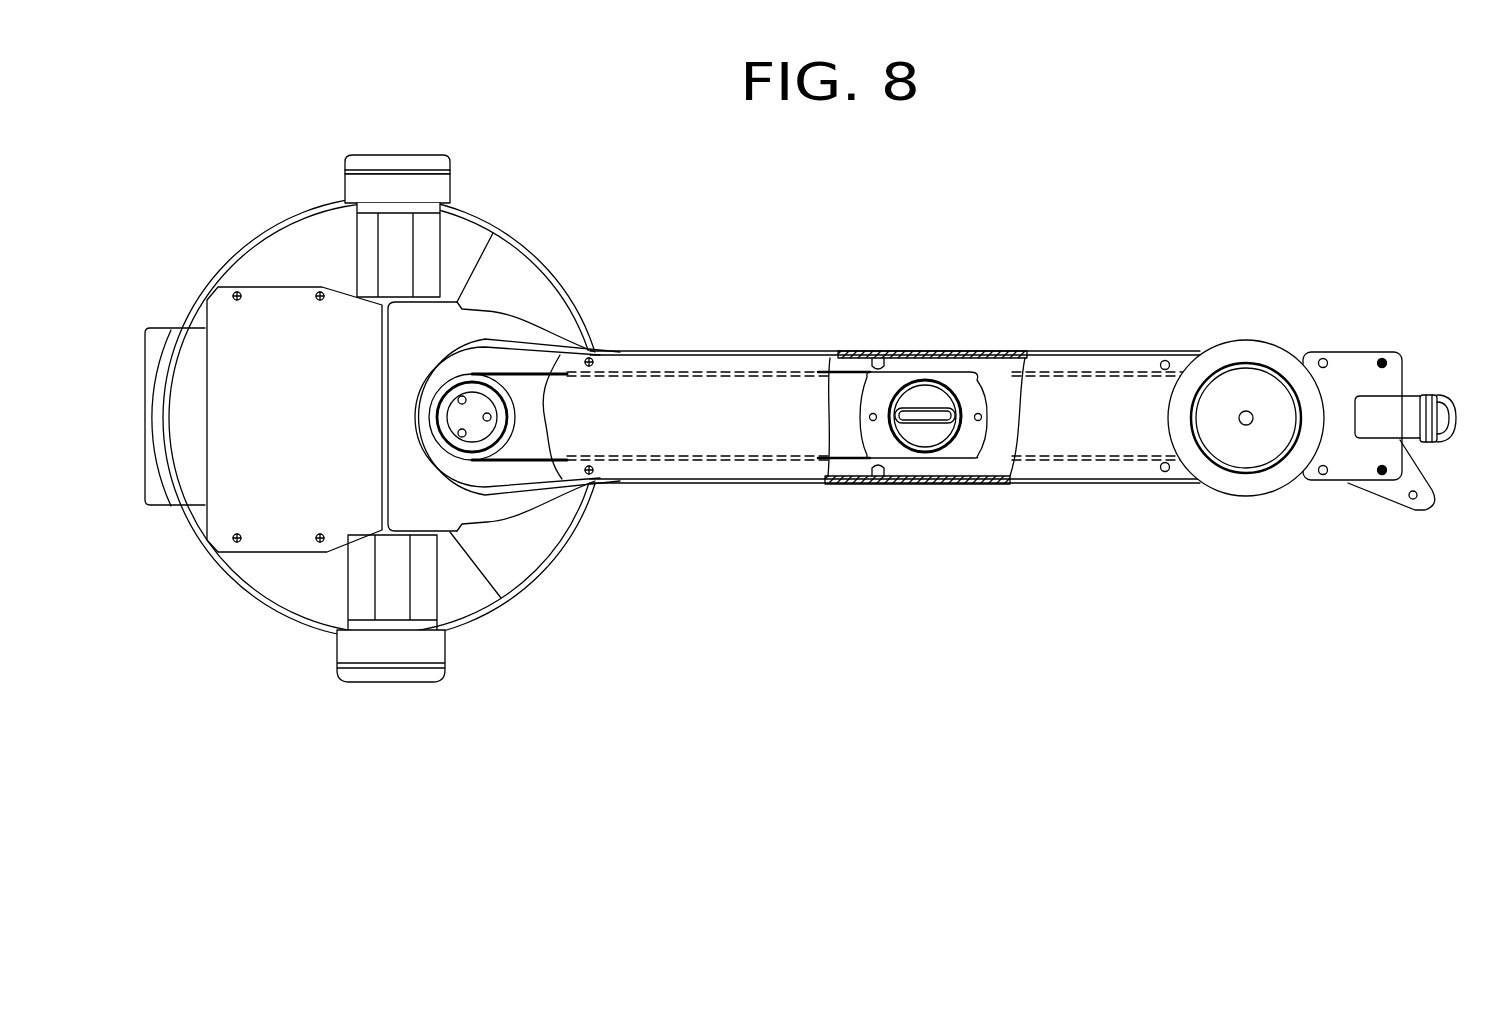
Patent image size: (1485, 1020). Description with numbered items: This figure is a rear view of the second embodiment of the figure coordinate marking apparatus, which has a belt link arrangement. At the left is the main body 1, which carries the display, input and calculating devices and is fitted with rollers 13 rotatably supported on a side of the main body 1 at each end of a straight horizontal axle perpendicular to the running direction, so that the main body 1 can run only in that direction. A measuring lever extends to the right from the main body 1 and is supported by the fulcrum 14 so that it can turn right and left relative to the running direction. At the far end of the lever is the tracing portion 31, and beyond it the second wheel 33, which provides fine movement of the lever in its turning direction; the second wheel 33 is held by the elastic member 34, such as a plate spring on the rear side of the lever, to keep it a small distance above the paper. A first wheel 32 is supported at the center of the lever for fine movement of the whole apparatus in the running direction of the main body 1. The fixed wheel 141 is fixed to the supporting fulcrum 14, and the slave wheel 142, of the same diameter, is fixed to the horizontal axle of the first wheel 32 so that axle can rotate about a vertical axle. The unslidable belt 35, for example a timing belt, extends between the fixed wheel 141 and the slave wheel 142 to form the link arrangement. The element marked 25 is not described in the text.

The main body 1 is at (509, 603).
The rollers 13 is at (443, 158).
The fulcrum 14 is at (477, 412).
The fixed wheel 141 is at (500, 427).
The slave wheel 142 is at (883, 397).
The tracing portion 31 is at (1235, 367).
The first wheel 32 is at (938, 427).
The second wheel 33 is at (1445, 395).
The elastic member 34 is at (1348, 373).
The unslidable belt 35 is at (847, 482).
The bracket tab 25 is at (1413, 500).